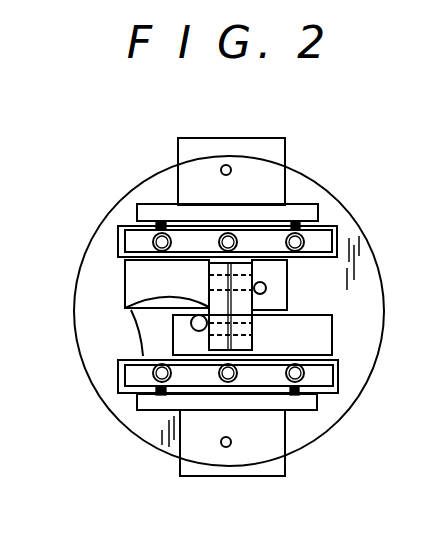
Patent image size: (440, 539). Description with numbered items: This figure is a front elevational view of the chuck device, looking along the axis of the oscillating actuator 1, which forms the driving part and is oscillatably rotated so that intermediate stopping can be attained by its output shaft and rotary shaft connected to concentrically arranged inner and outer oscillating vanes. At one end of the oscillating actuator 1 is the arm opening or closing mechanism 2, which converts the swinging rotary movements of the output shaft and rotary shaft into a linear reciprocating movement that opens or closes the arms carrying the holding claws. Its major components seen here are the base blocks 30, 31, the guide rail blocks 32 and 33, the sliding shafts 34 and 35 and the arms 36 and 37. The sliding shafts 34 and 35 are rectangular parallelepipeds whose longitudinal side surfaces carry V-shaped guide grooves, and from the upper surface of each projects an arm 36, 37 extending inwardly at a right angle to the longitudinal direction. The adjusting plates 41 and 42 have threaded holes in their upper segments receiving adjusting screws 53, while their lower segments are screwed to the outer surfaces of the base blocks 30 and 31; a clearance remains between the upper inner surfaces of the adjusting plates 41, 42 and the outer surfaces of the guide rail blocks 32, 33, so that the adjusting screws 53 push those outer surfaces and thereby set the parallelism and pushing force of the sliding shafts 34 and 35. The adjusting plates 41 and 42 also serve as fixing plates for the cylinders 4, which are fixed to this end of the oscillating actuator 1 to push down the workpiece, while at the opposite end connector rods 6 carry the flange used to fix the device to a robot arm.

The oscillating actuator 1 is at (345, 189).
The arm opening or closing mechanism 2 is at (119, 335).
The cylinder 4 is at (242, 150).
The connector rod 6 is at (301, 341).
The base block 30 is at (322, 396).
The base block 31 is at (117, 232).
The guide rail block 32 is at (127, 394).
The guide rail block 33 is at (320, 242).
The sliding shaft 34 is at (320, 340).
The sliding shaft 35 is at (137, 288).
The arm 36 is at (123, 308).
The arm 37 is at (252, 312).
The adjusting plate 41 is at (160, 403).
The adjusting plate 42 is at (162, 207).
The adjusting screw 53 is at (297, 397).